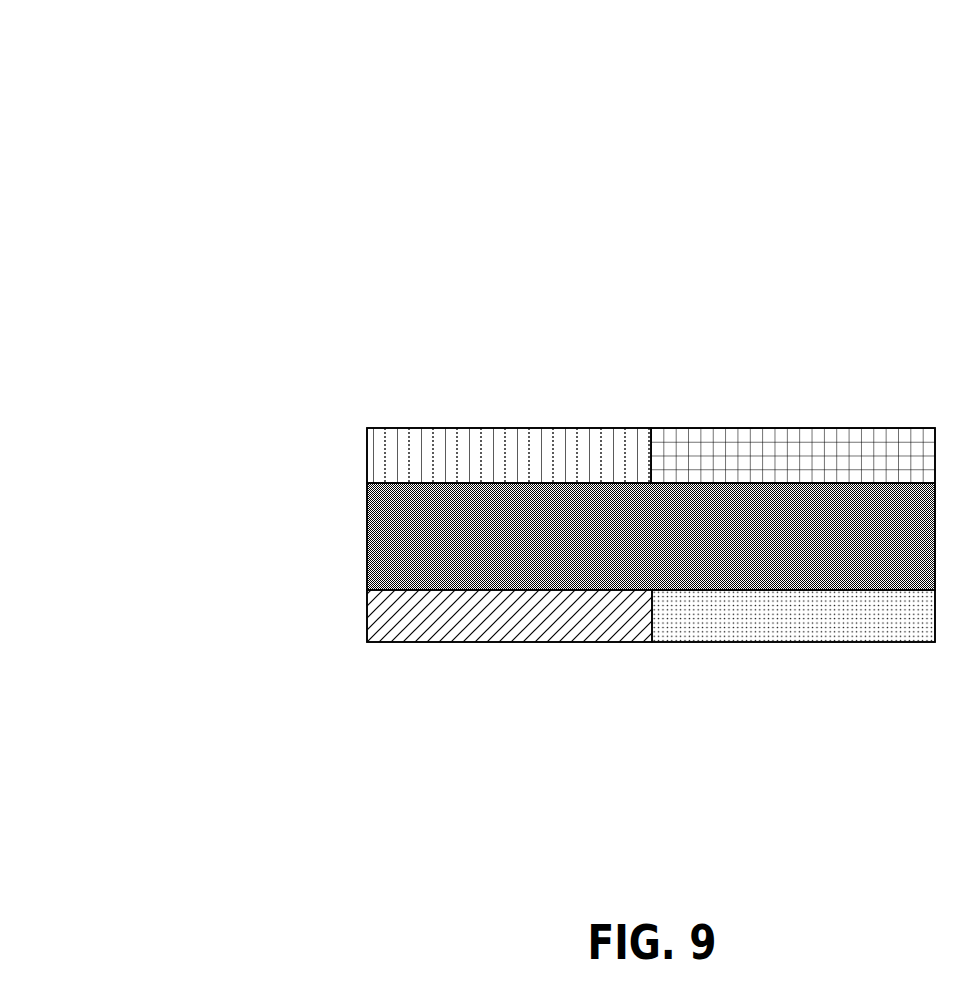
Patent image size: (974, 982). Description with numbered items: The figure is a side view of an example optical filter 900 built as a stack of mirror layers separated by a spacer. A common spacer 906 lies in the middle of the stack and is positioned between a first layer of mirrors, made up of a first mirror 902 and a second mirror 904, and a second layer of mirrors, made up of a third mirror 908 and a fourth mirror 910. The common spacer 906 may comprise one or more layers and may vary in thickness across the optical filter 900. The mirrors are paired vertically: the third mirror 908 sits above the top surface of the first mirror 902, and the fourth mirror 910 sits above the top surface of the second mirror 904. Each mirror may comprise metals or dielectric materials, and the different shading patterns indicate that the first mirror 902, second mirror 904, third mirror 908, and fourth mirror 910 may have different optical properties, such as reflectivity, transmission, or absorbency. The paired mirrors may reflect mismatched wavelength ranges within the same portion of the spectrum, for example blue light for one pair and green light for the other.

The optical filter 900 is at (137, 61).
The first mirror 902 is at (490, 642).
The second mirror 904 is at (775, 642).
The common spacer 906 is at (632, 544).
The third mirror 908 is at (507, 428).
The fourth mirror 910 is at (783, 428).